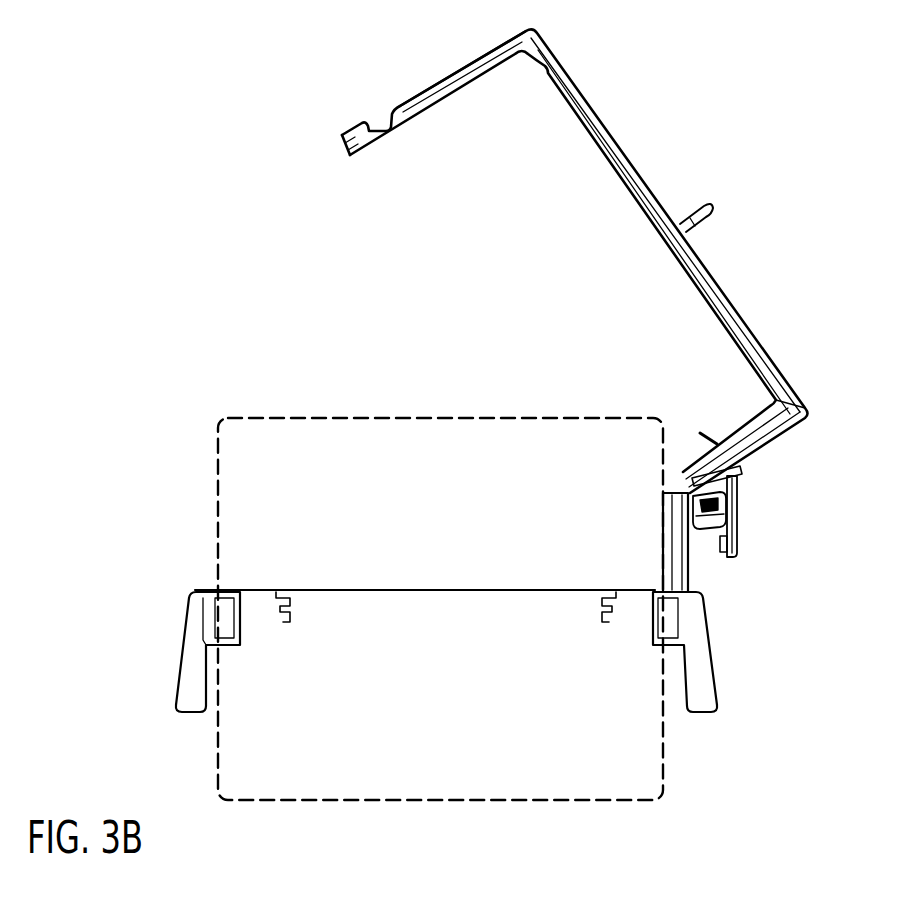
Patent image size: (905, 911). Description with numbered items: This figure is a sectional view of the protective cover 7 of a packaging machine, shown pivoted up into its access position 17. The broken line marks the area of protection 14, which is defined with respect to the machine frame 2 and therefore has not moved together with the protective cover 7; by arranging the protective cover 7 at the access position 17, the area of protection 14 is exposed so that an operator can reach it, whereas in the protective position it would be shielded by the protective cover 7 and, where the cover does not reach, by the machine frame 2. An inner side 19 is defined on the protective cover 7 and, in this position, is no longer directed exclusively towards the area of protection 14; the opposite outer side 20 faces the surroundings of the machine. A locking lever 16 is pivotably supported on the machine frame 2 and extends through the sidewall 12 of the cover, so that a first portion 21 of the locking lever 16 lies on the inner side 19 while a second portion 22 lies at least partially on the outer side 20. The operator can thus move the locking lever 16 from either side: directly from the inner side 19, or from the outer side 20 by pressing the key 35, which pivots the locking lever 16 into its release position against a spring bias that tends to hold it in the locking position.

The machine frame 2 is at (175, 655).
The protective cover 7 is at (592, 108).
The sidewall 12 is at (457, 80).
The area of protection 14 is at (290, 803).
The locking lever 16 is at (738, 490).
The access position 17 is at (212, 300).
The inner side 19 is at (487, 271).
The outer side 20 is at (805, 363).
The first portion 21 is at (700, 433).
The second portion 22 is at (742, 472).
The key 35 is at (738, 540).